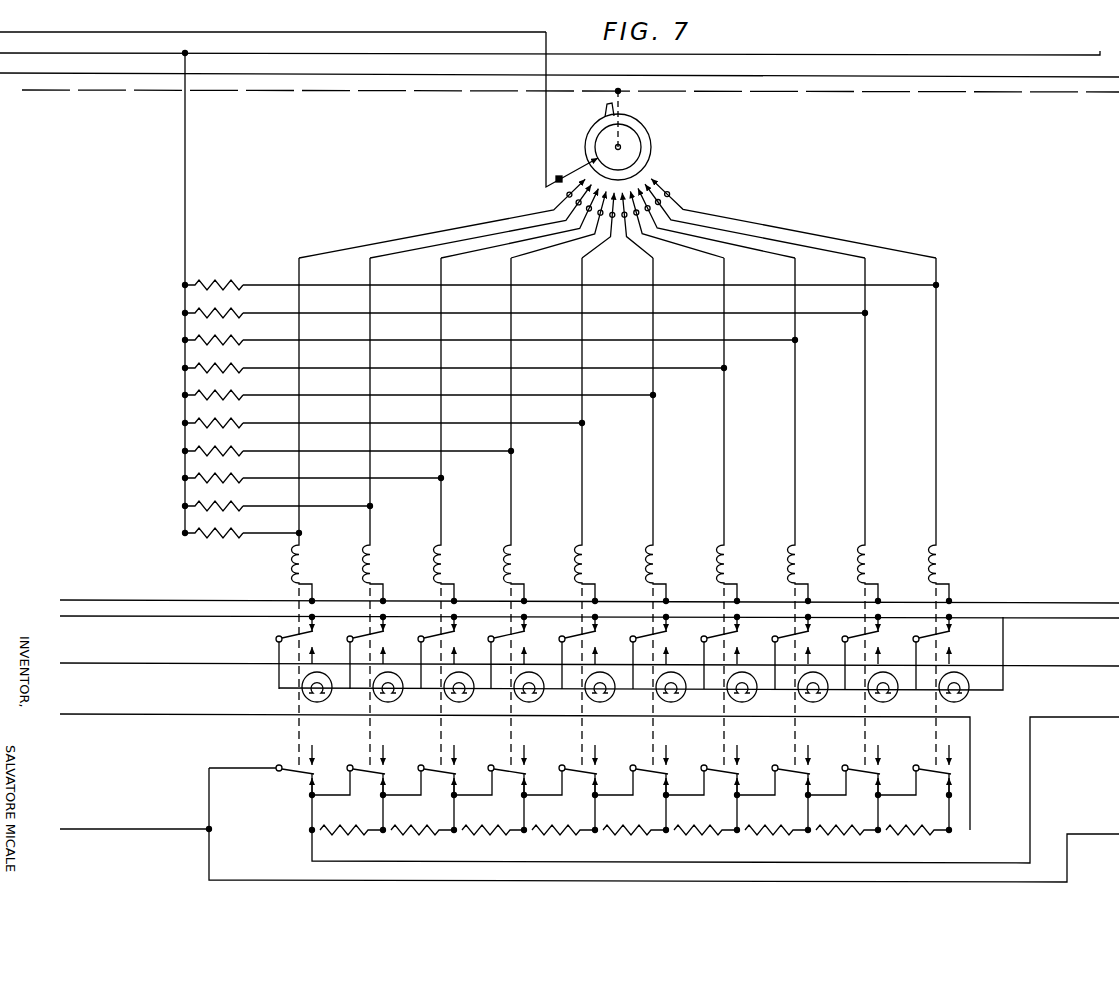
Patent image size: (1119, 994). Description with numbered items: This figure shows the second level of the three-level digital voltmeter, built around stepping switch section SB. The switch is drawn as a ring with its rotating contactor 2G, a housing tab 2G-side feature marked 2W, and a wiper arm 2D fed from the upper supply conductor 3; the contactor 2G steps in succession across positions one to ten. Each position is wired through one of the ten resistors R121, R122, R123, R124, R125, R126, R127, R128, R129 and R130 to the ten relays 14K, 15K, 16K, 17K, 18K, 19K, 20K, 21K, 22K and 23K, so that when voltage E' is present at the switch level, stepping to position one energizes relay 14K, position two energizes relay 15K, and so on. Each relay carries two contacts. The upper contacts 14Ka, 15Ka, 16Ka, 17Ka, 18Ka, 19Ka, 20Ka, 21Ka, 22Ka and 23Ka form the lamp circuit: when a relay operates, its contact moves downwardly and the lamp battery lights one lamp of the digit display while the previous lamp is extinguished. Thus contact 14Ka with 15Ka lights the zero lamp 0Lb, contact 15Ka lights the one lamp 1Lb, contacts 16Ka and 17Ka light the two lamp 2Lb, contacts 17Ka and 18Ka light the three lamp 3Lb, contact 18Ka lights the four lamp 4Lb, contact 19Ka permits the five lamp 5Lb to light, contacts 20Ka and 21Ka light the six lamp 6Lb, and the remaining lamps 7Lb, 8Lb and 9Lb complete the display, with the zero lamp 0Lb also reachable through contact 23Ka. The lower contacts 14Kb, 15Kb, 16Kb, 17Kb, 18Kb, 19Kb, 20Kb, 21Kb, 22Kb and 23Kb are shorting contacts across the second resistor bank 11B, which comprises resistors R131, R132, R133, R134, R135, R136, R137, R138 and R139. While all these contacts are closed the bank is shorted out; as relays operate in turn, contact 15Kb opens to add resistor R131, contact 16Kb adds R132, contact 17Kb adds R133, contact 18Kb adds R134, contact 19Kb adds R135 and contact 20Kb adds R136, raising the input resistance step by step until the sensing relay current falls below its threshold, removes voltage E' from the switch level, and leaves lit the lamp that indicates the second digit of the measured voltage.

The supply conductor 3 is at (558, 56).
The stepping switch section SB is at (651, 137).
The rotating contactor 2G is at (598, 118).
The switch ring 2W is at (640, 125).
The switch wiper arm 2D is at (587, 161).
The resistor R121 is at (561, 278).
The resistor R122 is at (525, 306).
The resistor R123 is at (490, 333).
The resistor R124 is at (455, 361).
The resistor R125 is at (419, 388).
The resistor R126 is at (384, 416).
The resistor R127 is at (348, 444).
The resistor R128 is at (313, 471).
The resistor R129 is at (278, 499).
The resistor R130 is at (242, 526).
The relay 14K is at (315, 431).
The relay 15K is at (386, 431).
The relay 16K is at (457, 431).
The relay 17K is at (527, 431).
The relay 18K is at (598, 431).
The relay 19K is at (669, 431).
The relay 20K is at (740, 431).
The relay 21K is at (811, 431).
The relay 22K is at (881, 431).
The relay 23K is at (952, 431).
The relay contact 14Ka is at (276, 652).
The relay contact 15Ka is at (355, 652).
The relay contact 16Ka is at (426, 652).
The relay contact 17Ka is at (496, 652).
The relay contact 18Ka is at (567, 652).
The relay contact 19Ka is at (638, 652).
The relay contact 20Ka is at (709, 652).
The relay contact 21Ka is at (780, 652).
The relay contact 22Ka is at (850, 652).
The relay contact 23Ka is at (921, 652).
The relay contact 14Kb is at (279, 783).
The relay contact 15Kb is at (370, 783).
The relay contact 16Kb is at (441, 783).
The relay contact 17Kb is at (511, 783).
The relay contact 18Kb is at (582, 783).
The relay contact 19Kb is at (653, 783).
The relay contact 20Kb is at (724, 783).
The relay contact 21Kb is at (795, 783).
The relay contact 22Kb is at (865, 783).
The relay contact 23Kb is at (919, 783).
The nine lamp 9Lb is at (321, 692).
The eight lamp 8Lb is at (392, 692).
The seven lamp 7Lb is at (463, 692).
The six lamp 6Lb is at (533, 692).
The five lamp 5Lb is at (604, 692).
The four lamp 4Lb is at (675, 692).
The three lamp 3Lb is at (746, 692).
The two lamp 2Lb is at (817, 692).
The one lamp 1Lb is at (887, 692).
The zero lamp 0Lb is at (958, 692).
The resistor R131 is at (364, 837).
The resistor R132 is at (435, 837).
The resistor R133 is at (506, 837).
The resistor R134 is at (576, 837).
The resistor R135 is at (647, 837).
The resistor R136 is at (718, 837).
The resistor R137 is at (789, 837).
The resistor R138 is at (860, 837).
The resistor R139 is at (930, 837).
The resistor bank 11B is at (302, 826).